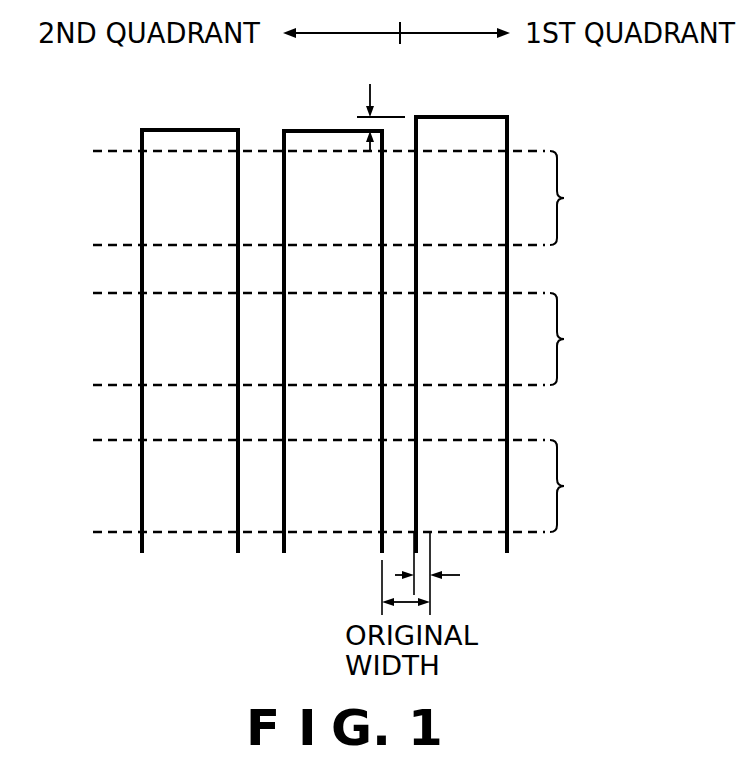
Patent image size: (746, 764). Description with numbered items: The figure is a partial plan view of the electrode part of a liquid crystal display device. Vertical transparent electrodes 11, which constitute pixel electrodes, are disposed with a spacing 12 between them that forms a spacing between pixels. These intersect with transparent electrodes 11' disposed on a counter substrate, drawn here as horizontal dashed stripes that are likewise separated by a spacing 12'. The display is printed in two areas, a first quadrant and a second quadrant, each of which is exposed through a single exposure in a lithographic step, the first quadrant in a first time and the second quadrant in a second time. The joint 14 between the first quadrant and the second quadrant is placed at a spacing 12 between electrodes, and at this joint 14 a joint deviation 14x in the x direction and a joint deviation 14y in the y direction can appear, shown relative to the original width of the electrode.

The transparent electrodes 11 is at (341, 312).
The spacing 12 is at (341, 108).
The transparent electrodes 11' is at (357, 341).
The spacing 12' is at (570, 338).
The joint 14 is at (402, 110).
The joint deviation 14x is at (446, 574).
The joint deviation 14y is at (357, 105).